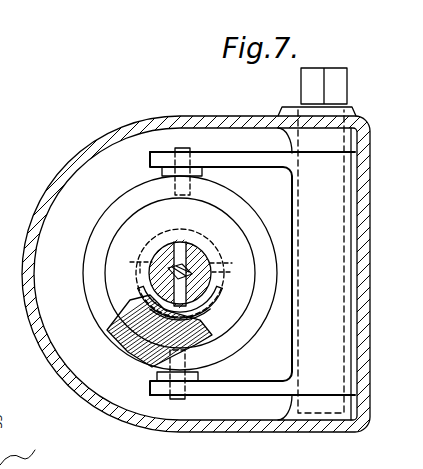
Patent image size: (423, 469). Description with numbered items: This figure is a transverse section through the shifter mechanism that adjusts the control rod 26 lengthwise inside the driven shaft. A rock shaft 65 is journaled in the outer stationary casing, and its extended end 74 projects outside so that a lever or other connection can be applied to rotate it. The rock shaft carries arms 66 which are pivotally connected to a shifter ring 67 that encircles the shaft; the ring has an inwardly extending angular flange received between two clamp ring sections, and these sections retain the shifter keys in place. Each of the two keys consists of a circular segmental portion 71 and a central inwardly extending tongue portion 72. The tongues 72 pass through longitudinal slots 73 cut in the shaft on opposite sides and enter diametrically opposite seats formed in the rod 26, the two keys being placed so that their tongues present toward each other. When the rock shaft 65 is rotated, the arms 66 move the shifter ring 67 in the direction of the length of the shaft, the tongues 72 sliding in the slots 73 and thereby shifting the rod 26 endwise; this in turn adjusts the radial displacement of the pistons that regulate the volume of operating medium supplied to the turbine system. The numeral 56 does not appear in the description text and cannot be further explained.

The control rod 26 is at (152, 262).
The housing 56 is at (129, 422).
The rock shaft 65 is at (340, 220).
The arms 66 is at (234, 152).
The ring 67 is at (86, 278).
The circular segmental portion 71 is at (214, 304).
The tongue portion 72 is at (180, 251).
The longitudinal slots 73 is at (212, 257).
The extended end 74 is at (337, 90).